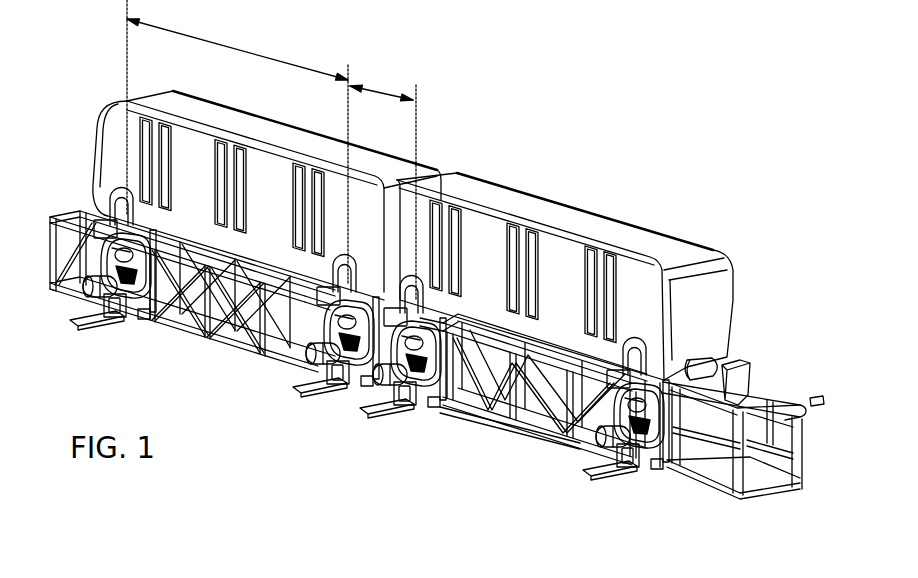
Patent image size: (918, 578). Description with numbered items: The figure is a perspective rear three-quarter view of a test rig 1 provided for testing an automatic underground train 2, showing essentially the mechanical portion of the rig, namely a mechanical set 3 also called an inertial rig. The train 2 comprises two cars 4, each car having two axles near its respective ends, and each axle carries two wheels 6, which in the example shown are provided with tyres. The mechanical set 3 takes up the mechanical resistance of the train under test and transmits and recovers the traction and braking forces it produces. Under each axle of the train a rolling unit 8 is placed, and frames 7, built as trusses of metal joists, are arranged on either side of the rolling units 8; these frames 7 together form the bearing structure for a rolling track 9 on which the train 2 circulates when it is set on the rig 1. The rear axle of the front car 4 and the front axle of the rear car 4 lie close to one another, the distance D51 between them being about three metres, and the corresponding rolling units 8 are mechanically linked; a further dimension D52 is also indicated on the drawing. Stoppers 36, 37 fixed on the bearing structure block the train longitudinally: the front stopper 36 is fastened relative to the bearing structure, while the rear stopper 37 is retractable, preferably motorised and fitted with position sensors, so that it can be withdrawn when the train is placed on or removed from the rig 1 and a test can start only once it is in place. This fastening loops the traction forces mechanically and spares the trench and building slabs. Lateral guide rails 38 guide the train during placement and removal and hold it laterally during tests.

The test rig 1 is at (427, 453).
The automatic underground train 2 is at (577, 203).
The mechanical set 3 is at (527, 437).
The car 4 is at (277, 130).
The wheel 6 is at (113, 190).
The frame 7 is at (70, 300).
The rolling unit 8 is at (112, 317).
The rolling track 9 is at (773, 390).
The front stopper 36 is at (93, 200).
The rear stopper 37 is at (740, 373).
The lateral guide rail 38 is at (815, 397).
The distance between the two close axles D51 is at (383, 181).
The distance D52 is at (237, 142).